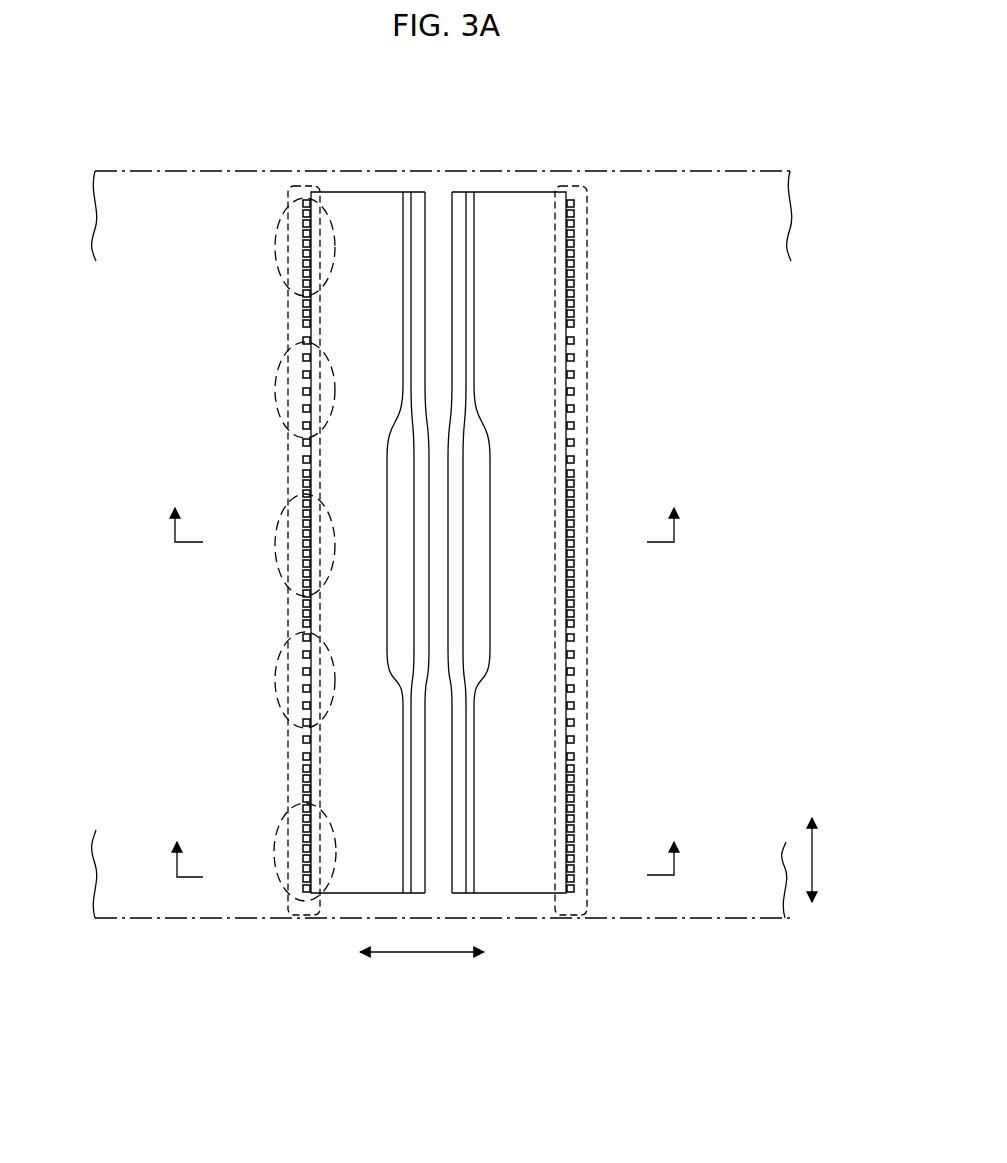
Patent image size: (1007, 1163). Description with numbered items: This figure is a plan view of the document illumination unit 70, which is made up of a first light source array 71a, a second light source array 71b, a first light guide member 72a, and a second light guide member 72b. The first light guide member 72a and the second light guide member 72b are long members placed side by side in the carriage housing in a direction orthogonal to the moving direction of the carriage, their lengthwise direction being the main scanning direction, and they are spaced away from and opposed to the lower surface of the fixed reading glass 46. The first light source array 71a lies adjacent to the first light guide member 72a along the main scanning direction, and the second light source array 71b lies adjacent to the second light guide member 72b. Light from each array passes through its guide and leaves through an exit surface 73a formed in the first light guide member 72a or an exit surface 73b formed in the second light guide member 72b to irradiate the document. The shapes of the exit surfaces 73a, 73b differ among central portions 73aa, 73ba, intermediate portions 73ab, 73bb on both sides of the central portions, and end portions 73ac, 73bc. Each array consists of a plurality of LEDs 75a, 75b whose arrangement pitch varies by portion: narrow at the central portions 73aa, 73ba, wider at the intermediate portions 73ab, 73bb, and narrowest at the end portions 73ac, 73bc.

The fixed reading glass 46 is at (737, 192).
The document illumination unit 70 is at (349, 186).
The first light source array 71a is at (299, 170).
The second light source array 71b is at (578, 170).
The first light guide member 72a is at (380, 191).
The second light guide member 72b is at (505, 191).
The exit surface 73a is at (422, 191).
The exit surface 73b is at (455, 191).
The central portion 73aa is at (400, 548).
The intermediate portion 73ab is at (402, 390).
The end portion 73ac is at (414, 208).
The central portion 73ba is at (478, 548).
The intermediate portion 73bb is at (476, 392).
The end portion 73bc is at (462, 208).
The LED 75a is at (305, 233).
The LED 75b is at (575, 236).